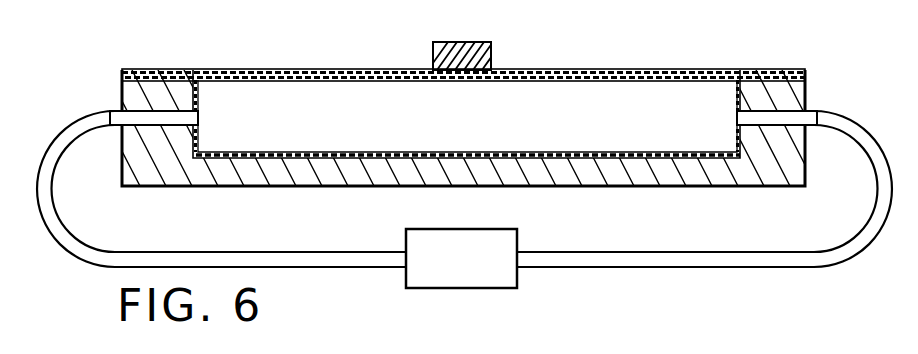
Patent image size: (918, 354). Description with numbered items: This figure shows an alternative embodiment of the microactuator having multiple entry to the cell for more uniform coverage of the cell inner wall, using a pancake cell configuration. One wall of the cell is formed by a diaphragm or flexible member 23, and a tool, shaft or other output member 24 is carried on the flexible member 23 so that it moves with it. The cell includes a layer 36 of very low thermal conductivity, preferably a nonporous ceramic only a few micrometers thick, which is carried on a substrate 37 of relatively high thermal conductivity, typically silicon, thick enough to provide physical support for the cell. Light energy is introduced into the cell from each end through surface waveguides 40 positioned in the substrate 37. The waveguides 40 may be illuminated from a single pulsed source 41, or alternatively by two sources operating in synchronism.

The flexible member 23 is at (598, 70).
The output member 24 is at (457, 42).
The layer of very low thermal conductivity 36 is at (598, 158).
The substrate 37 is at (697, 177).
The surface waveguides 40 is at (137, 115).
The pulsed source 41 is at (461, 258).